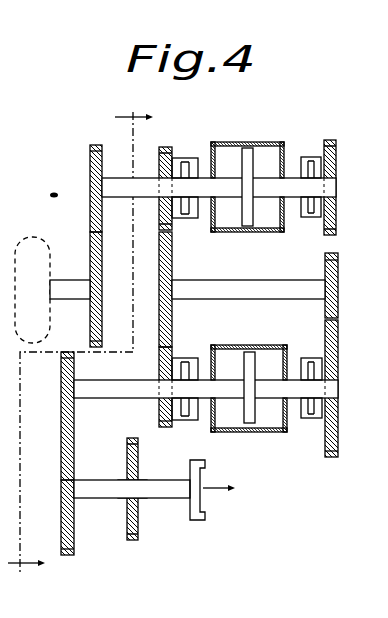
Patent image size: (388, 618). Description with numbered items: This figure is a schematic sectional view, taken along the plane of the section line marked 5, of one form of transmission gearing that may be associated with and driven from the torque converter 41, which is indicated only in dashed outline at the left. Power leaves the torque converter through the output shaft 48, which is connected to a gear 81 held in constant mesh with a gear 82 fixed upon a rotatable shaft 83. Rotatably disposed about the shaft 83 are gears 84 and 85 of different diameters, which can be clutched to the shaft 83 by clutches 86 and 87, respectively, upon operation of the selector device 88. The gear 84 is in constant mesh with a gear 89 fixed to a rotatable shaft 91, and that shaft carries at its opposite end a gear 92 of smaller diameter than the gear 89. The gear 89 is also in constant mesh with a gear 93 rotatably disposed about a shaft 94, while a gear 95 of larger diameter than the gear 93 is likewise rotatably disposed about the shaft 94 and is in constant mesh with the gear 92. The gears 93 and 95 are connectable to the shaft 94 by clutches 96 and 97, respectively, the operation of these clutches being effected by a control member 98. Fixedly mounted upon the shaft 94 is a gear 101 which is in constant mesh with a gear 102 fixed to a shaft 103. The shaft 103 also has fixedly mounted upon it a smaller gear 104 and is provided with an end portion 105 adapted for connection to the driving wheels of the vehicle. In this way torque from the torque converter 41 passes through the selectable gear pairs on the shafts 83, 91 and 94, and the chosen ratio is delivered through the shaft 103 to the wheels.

The section line for FIG. 5 is at (80, 342).
The torque converter 41 is at (33, 226).
The output shaft 48 is at (67, 282).
The gear 81 is at (102, 256).
The gear 82 is at (90, 148).
The rotatable shaft 83 is at (115, 184).
The gear 84 is at (165, 153).
The gear 85 is at (330, 140).
The clutch 86 is at (186, 157).
The clutch 87 is at (307, 157).
The selector device 88 is at (238, 142).
The gear 89 is at (172, 246).
The rotatable shaft 91 is at (244, 281).
The gear 92 is at (338, 258).
The gear 93 is at (172, 428).
The shaft 94 is at (111, 397).
The gear 95 is at (338, 457).
The clutch 96 is at (190, 358).
The clutch 97 is at (312, 358).
The control member 98 is at (266, 432).
The gear 101 is at (61, 396).
The gear 102 is at (68, 556).
The shaft 103 is at (110, 499).
The smaller gear 104 is at (136, 540).
The end portion 105 is at (198, 520).